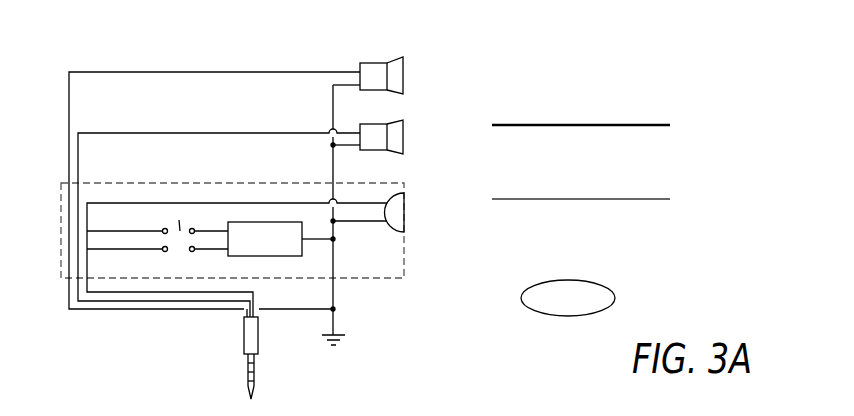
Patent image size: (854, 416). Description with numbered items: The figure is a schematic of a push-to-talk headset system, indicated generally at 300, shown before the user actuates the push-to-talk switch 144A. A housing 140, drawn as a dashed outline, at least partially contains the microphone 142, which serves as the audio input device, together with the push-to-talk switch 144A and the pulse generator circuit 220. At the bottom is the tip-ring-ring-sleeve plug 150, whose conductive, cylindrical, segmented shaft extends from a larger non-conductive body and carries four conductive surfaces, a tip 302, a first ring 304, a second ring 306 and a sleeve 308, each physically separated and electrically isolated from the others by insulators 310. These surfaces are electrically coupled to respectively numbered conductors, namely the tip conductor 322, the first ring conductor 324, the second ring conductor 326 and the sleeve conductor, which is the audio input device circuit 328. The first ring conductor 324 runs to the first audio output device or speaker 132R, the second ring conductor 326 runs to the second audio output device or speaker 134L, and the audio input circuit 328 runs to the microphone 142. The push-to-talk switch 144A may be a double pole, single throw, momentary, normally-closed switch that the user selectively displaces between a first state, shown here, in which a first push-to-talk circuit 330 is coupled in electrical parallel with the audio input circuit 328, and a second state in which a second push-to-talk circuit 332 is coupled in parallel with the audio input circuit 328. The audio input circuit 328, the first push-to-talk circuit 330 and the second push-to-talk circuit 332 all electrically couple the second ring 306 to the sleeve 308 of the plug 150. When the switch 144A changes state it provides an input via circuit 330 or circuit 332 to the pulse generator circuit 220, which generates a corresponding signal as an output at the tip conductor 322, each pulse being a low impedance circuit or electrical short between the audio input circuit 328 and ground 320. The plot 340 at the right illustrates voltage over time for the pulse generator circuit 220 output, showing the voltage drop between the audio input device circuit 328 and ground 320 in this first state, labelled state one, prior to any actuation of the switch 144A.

The audio accessory detection circuit 300 is at (508, 61).
The housing 140 is at (404, 252).
The first ring conductor 324 is at (313, 72).
The second ring conductor 326 is at (230, 132).
The audio input device circuit 328 is at (247, 204).
The ground 320 is at (335, 316).
The first audio output device or speaker 132R is at (403, 76).
The left speaker 134L is at (403, 137).
The microphone 142 is at (404, 212).
The first push-to-talk circuit 330 is at (113, 231).
The second push-to-talk circuit 332 is at (113, 249).
The user-actuatable push-to-talk switch 144A is at (182, 229).
The pulse generator circuit 220 is at (281, 248).
The tip conductor 322 is at (316, 242).
The tip-ring-ring-sleeve plug 150 is at (259, 335).
The sleeve 308 is at (255, 361).
The second ring 306 is at (255, 373).
The first ring 304 is at (255, 385).
The tip 302 is at (249, 398).
The insulators 310 is at (247, 362).
The illustrative plot 340 is at (662, 166).